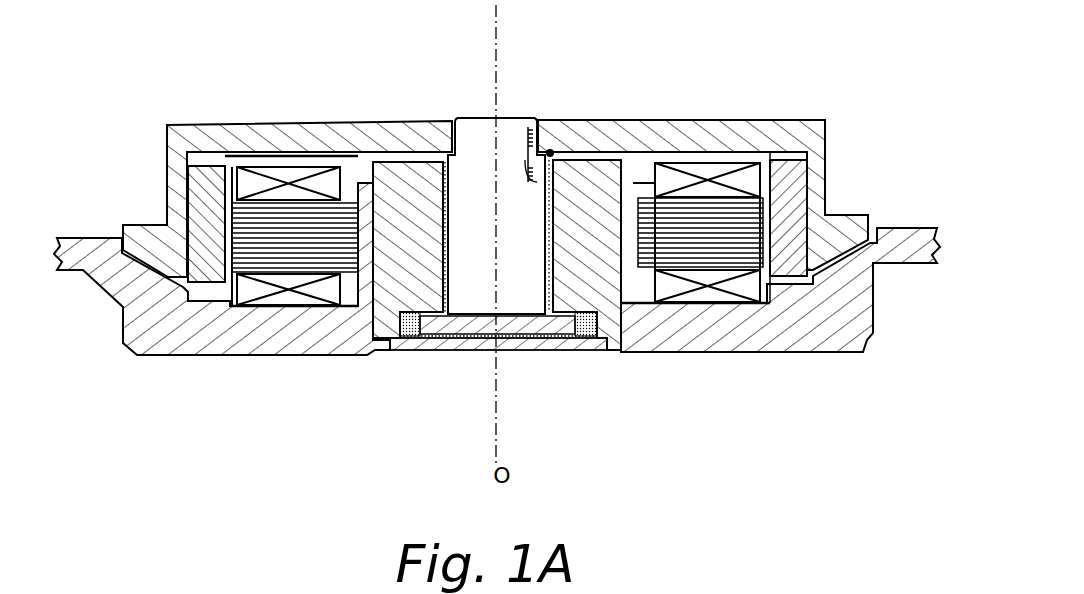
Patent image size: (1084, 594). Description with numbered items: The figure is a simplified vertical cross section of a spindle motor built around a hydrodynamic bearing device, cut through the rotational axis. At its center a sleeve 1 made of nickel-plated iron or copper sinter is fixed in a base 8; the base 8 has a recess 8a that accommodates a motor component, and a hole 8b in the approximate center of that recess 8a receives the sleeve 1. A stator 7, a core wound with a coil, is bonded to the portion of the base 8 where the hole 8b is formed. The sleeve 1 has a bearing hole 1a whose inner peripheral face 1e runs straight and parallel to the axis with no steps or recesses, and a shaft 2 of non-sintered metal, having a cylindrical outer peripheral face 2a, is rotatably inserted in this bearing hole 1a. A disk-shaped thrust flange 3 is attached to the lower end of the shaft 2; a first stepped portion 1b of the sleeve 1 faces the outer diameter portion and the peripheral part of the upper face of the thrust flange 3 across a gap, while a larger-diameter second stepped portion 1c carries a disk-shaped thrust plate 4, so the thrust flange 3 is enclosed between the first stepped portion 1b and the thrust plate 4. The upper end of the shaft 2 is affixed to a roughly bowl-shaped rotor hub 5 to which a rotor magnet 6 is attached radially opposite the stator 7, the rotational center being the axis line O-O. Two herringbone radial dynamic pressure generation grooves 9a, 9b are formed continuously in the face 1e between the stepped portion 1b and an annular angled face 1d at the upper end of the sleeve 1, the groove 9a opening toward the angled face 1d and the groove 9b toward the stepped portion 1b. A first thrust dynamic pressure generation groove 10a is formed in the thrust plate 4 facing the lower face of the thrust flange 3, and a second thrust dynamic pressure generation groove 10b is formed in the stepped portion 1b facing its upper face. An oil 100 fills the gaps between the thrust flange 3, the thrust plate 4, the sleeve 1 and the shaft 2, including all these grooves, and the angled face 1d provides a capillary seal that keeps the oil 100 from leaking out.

The sleeve 1 is at (604, 166).
The bearing hole 1a is at (548, 150).
The first stepped portion 1b is at (587, 350).
The second stepped portion 1c is at (598, 350).
The annular angled face 1d is at (575, 156).
The inner peripheral face 1e is at (533, 125).
The shaft 2 is at (468, 190).
The cylindrical outer peripheral face 2a is at (430, 210).
The thrust flange 3 is at (460, 350).
The thrust plate 4 is at (523, 350).
The rotor hub 5 is at (293, 140).
The rotor magnet 6 is at (810, 152).
The stator 7 is at (790, 165).
The base 8 is at (735, 348).
The recess 8a is at (217, 289).
The hole 8b is at (392, 197).
The radial dynamic pressure generation groove 9a is at (562, 213).
The radial dynamic pressure generation groove 9b is at (562, 280).
The first thrust dynamic pressure generation groove 10a is at (405, 334).
The second thrust dynamic pressure generation groove 10b is at (390, 340).
The oil 100 is at (573, 350).